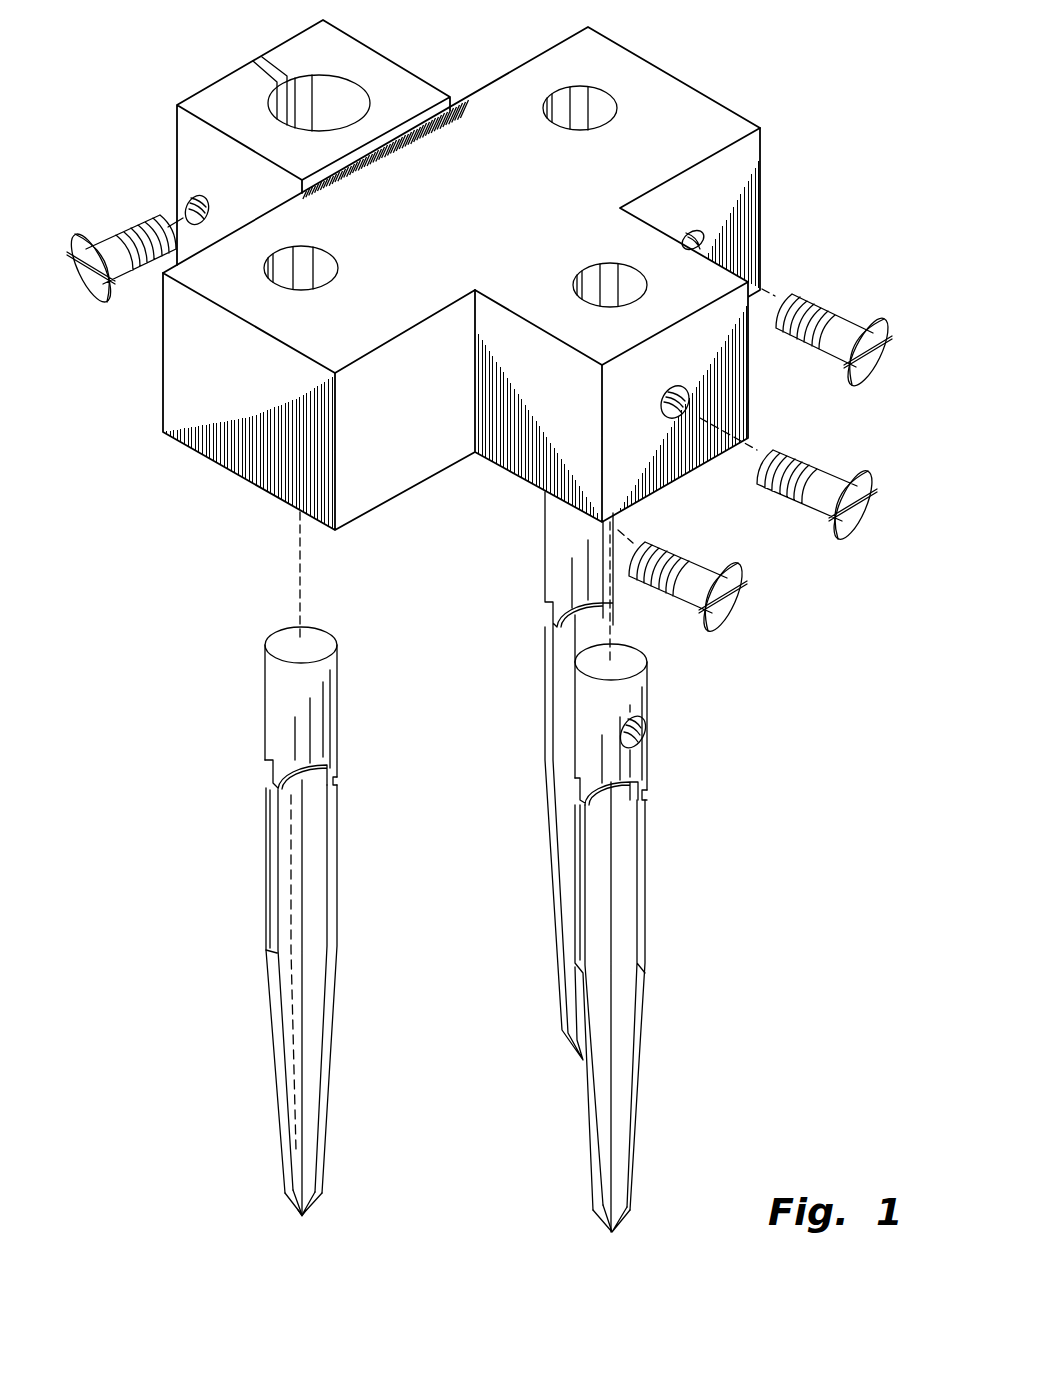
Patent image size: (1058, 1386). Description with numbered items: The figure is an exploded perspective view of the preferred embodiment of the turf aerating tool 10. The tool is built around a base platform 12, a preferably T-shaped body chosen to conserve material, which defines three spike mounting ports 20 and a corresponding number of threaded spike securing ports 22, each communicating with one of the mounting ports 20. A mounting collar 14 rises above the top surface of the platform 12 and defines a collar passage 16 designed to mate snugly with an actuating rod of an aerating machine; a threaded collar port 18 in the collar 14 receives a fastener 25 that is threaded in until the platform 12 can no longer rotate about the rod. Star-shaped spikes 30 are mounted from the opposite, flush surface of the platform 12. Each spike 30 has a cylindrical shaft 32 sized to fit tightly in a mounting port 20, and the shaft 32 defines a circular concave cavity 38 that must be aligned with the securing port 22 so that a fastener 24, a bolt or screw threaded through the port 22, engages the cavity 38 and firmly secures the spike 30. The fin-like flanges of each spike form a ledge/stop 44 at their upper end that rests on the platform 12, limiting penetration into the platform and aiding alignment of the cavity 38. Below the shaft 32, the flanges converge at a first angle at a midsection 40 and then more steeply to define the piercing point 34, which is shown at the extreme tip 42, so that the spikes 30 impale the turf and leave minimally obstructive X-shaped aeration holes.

The turf aerating tool 10 is at (802, 74).
The base platform 12 is at (690, 82).
The mounting collar 14 is at (176, 108).
The collar passage 16 is at (332, 100).
The threaded collar port 18 is at (187, 200).
The spike mounting port 20 is at (600, 108).
The spike securing port 22 is at (700, 232).
The fastener 24 is at (748, 602).
The fastener 25 is at (117, 247).
The spike 30 is at (210, 812).
The cylindrical shaft 32 is at (337, 693).
The piercing point 34 is at (317, 1195).
The cavity 38 is at (337, 878).
The midsection 40 is at (313, 960).
The point 42 is at (300, 1213).
The ledge/stop 44 is at (265, 783).